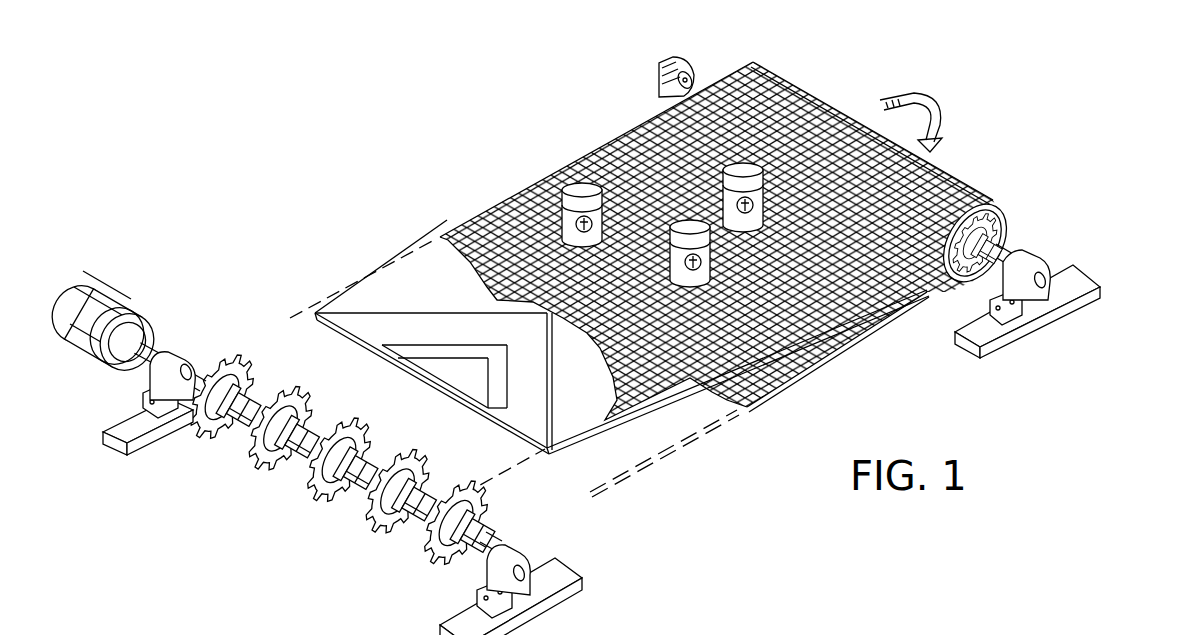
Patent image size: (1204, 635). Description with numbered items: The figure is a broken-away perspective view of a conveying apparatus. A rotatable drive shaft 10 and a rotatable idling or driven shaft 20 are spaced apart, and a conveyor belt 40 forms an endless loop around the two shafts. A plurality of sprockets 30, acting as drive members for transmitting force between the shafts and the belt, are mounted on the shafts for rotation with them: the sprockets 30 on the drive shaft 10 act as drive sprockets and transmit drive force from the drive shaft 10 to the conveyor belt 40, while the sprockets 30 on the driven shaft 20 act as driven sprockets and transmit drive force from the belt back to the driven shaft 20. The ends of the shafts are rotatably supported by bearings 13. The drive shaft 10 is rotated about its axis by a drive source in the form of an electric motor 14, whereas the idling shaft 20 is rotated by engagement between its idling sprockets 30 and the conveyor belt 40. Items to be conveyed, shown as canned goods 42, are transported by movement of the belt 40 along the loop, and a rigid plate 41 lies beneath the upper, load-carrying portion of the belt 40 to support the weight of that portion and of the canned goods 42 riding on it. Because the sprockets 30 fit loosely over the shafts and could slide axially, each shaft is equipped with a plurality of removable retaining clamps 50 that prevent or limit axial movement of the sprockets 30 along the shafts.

The drive shaft 10 is at (162, 362).
The bearings 13 is at (112, 446).
The electric motor 14 is at (106, 290).
The idling or driven shaft 20 is at (1005, 253).
The sprockets 30 is at (208, 432).
The conveyor belt 40 is at (512, 193).
The rigid plate 41 is at (598, 423).
The canned goods 42 is at (584, 186).
The removable retaining clamps 50 is at (347, 497).